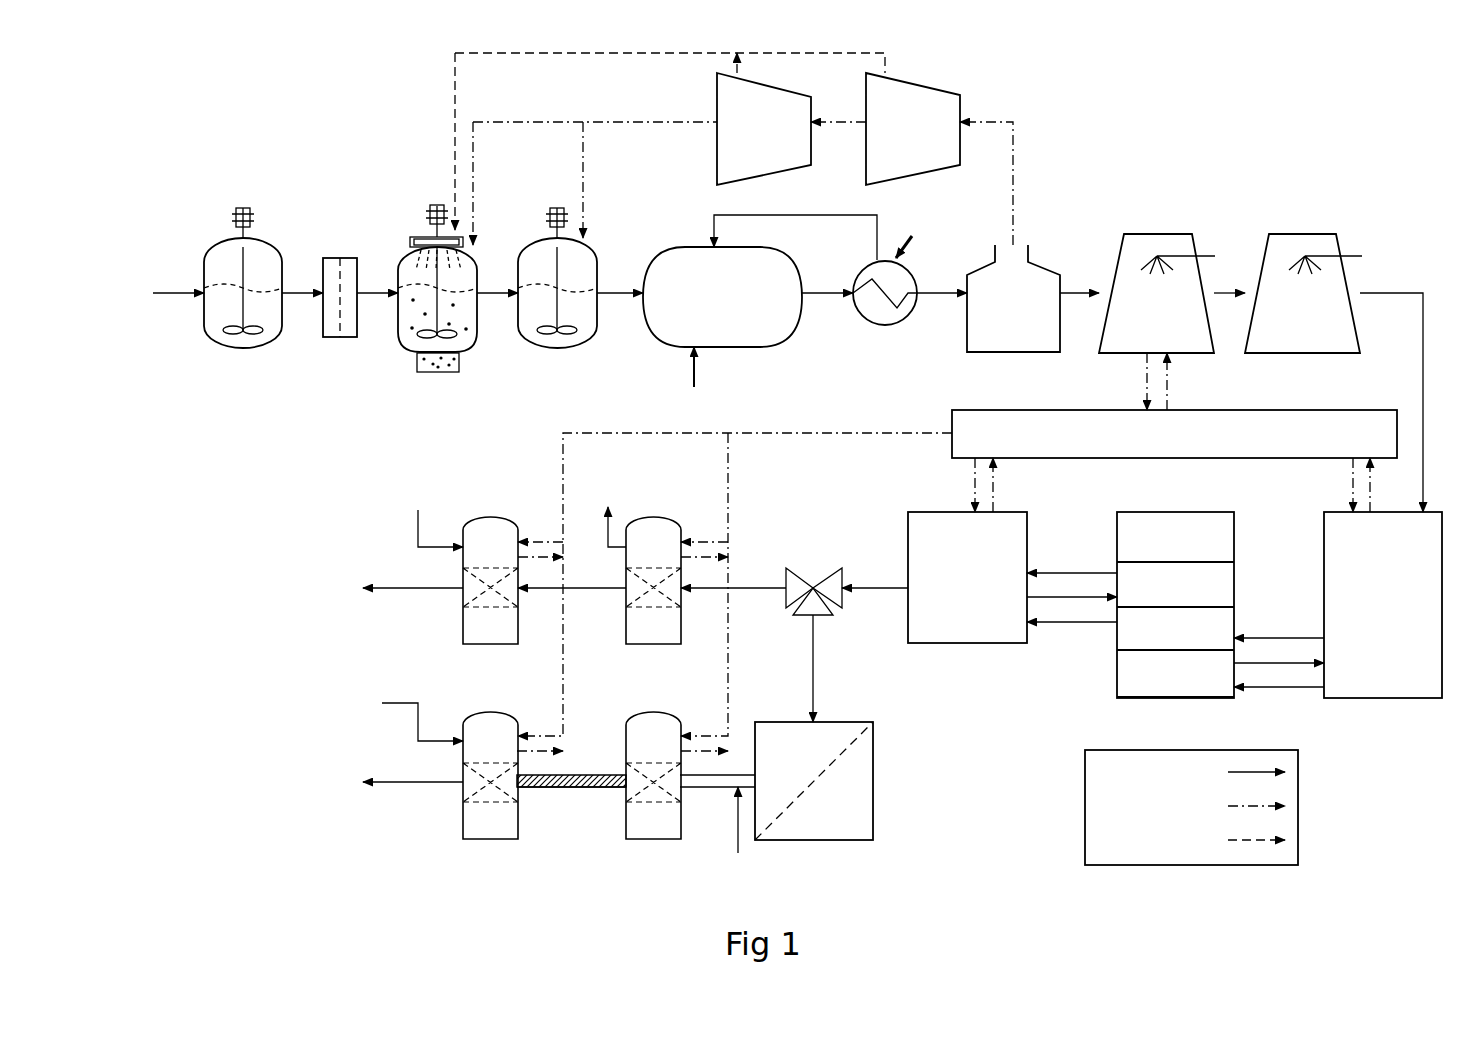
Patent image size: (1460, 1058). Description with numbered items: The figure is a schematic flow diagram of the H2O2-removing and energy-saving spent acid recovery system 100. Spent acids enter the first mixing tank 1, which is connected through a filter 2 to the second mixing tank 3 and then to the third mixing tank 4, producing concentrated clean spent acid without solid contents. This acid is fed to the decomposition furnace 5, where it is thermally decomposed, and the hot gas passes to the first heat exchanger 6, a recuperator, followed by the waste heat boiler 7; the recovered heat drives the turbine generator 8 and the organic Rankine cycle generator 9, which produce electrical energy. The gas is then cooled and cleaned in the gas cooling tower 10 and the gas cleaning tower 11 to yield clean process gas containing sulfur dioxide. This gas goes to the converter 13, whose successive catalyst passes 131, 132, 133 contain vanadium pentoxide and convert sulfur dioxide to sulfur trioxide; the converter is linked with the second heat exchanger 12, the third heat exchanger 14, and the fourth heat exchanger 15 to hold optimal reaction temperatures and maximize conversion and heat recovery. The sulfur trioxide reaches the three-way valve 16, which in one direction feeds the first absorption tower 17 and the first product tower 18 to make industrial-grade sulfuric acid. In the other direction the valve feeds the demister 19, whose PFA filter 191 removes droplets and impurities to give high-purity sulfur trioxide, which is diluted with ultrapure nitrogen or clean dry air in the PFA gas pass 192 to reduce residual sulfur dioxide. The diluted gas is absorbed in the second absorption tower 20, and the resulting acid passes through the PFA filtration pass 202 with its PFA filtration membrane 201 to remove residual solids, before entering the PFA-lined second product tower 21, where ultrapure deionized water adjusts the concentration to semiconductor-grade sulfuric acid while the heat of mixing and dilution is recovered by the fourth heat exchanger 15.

The spent acid recovery system 100 is at (1428, 66).
The first mixing tank 1 is at (208, 255).
The filter 2 is at (330, 258).
The second mixing tank 3 is at (412, 330).
The third mixing tank 4 is at (527, 332).
The decomposition furnace 5 is at (680, 257).
The first heat exchanger 6 is at (867, 308).
The waste heat boiler 7 is at (1047, 352).
The turbine generator 8 is at (953, 103).
The organic Rankine cycle generator 9 is at (717, 153).
The gas cooling tower 10 is at (1160, 240).
The gas cleaning tower 11 is at (1305, 240).
The second heat exchanger 12 is at (1385, 698).
The converter 13 is at (1175, 512).
The converter pass 131 is at (1175, 680).
The converter pass 132 is at (1175, 634).
The converter pass 133 is at (1175, 584).
The third heat exchanger 14 is at (930, 512).
The fourth heat exchanger 15 is at (1010, 422).
The 3-way valve 16 is at (813, 568).
The first absorption tower 17 is at (665, 540).
The first product tower 18 is at (490, 540).
The demister 19 is at (873, 825).
The PFA filter 191 is at (853, 740).
The PFA gas pass 192 is at (710, 787).
The second absorption tower 20 is at (652, 820).
The PFA filtration membrane 201 is at (598, 775).
The PFA filtration pass 202 is at (592, 787).
The second product tower 21 is at (463, 821).